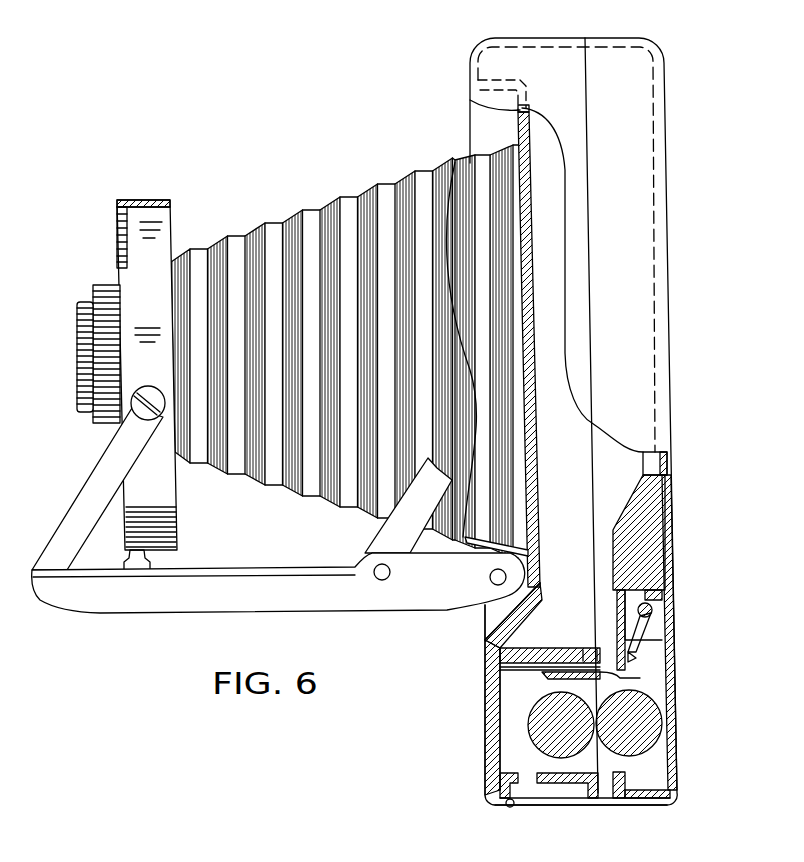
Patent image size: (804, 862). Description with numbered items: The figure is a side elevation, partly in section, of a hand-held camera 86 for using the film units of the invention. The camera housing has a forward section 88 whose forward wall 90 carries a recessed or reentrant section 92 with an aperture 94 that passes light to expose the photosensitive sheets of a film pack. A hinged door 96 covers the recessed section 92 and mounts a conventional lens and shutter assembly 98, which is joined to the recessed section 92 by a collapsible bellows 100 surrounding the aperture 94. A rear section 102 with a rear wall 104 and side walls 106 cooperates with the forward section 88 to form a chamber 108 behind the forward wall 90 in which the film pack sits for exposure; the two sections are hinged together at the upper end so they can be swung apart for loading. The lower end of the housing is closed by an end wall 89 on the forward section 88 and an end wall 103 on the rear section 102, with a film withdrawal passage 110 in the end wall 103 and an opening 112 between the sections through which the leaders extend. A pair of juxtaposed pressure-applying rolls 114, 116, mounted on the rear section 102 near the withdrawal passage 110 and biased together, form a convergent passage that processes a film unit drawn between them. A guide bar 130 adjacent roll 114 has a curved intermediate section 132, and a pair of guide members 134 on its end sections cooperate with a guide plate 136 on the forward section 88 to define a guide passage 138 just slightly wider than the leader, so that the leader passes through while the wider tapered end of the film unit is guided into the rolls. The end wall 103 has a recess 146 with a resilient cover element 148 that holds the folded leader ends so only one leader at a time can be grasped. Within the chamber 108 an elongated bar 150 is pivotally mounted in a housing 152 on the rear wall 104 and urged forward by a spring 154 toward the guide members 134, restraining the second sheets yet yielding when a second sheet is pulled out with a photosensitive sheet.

The hand-held camera 86 is at (441, 148).
The forward section 88 is at (471, 52).
The end wall 89 is at (492, 757).
The forward wall 90 is at (470, 73).
The recessed or reentrant section 92 is at (540, 570).
The aperture 94 is at (532, 490).
The hinged door 96 is at (296, 605).
The lens and shutter assembly 98 is at (138, 200).
The collapsible bellows 100 is at (267, 222).
The rear section 102 is at (668, 86).
The end wall 103 is at (675, 800).
The rear wall 104 is at (671, 297).
The side walls 106 is at (607, 238).
The chamber 108 is at (627, 465).
The film withdrawal passage 110 is at (615, 796).
The opening 112 is at (545, 778).
The pressure-applying roll 114 is at (540, 706).
The pressure-applying roll 116 is at (655, 723).
The guide bar 130 is at (540, 669).
The intermediate section 132 is at (548, 680).
The guide members 134 is at (640, 677).
The guide plate 136 is at (563, 647).
The guide passage 138 is at (540, 647).
The recess 146 is at (567, 800).
The resilient cover element 148 is at (534, 808).
The elongated bar 150 is at (637, 660).
The housing 152 is at (657, 537).
The spring 154 is at (665, 605).